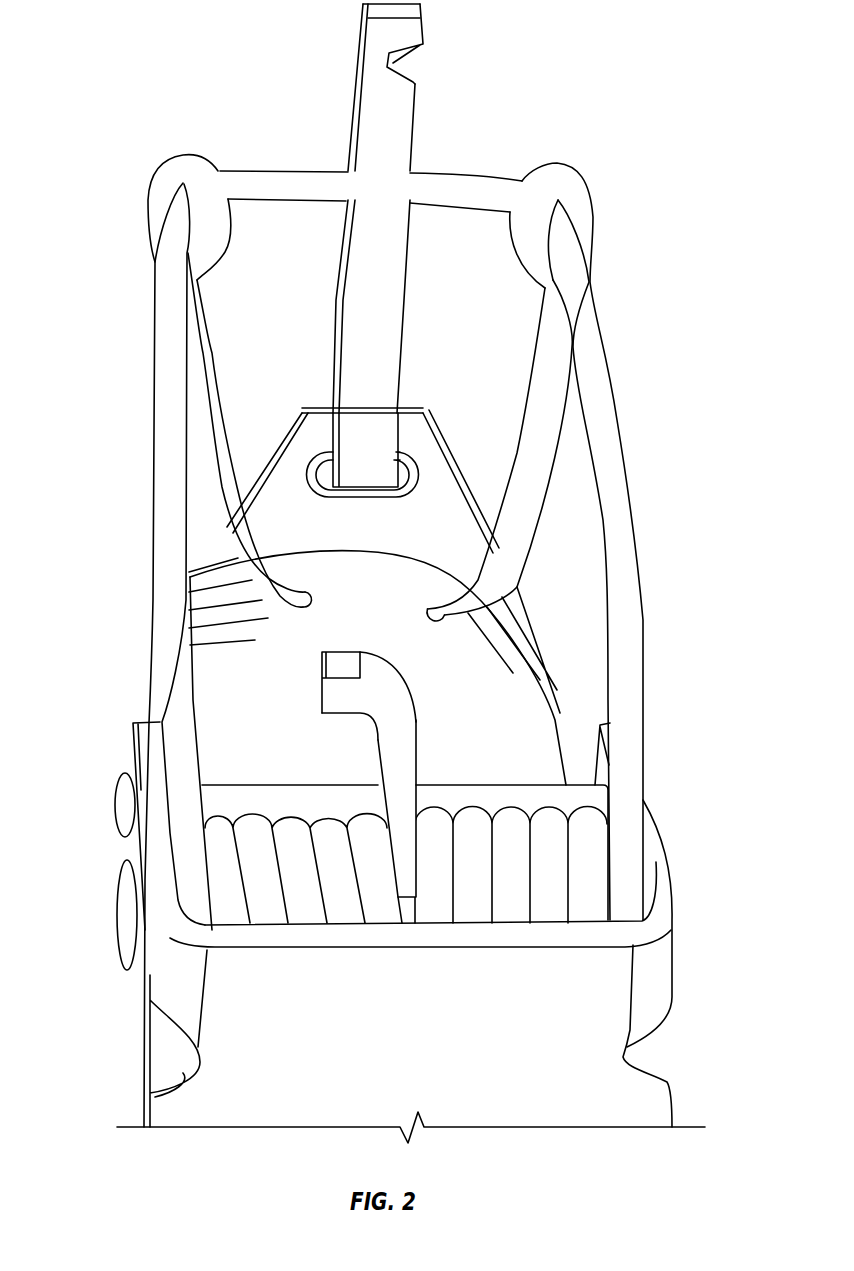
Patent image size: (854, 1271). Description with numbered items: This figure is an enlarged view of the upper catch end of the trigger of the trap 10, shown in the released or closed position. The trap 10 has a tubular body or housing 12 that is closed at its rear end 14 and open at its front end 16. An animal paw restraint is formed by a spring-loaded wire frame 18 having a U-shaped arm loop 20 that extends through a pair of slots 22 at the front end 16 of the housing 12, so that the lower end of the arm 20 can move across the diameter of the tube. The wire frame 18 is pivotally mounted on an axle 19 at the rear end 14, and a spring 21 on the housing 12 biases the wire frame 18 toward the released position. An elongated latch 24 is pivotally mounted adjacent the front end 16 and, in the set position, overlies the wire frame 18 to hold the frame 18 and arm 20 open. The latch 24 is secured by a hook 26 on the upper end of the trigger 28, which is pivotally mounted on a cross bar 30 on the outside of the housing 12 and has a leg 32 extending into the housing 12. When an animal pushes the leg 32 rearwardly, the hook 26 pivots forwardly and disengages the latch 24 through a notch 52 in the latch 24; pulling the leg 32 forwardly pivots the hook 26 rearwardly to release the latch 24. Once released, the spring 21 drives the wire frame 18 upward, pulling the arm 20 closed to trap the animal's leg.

The trap 10 is at (645, 145).
The tubular body or housing 12 is at (520, 727).
The rear end 14 is at (590, 1003).
The front end 16 is at (320, 577).
The wire frame 18 is at (596, 375).
The axle 19 is at (116, 916).
The U-shaped arm loop 20 is at (550, 357).
The spring 21 is at (587, 860).
The slots 22 is at (205, 630).
The latch 24 is at (400, 107).
The hook 26 is at (337, 698).
The trigger 28 is at (395, 725).
The cross bar 30 is at (122, 810).
The leg 32 is at (395, 783).
The notch 52 is at (397, 60).